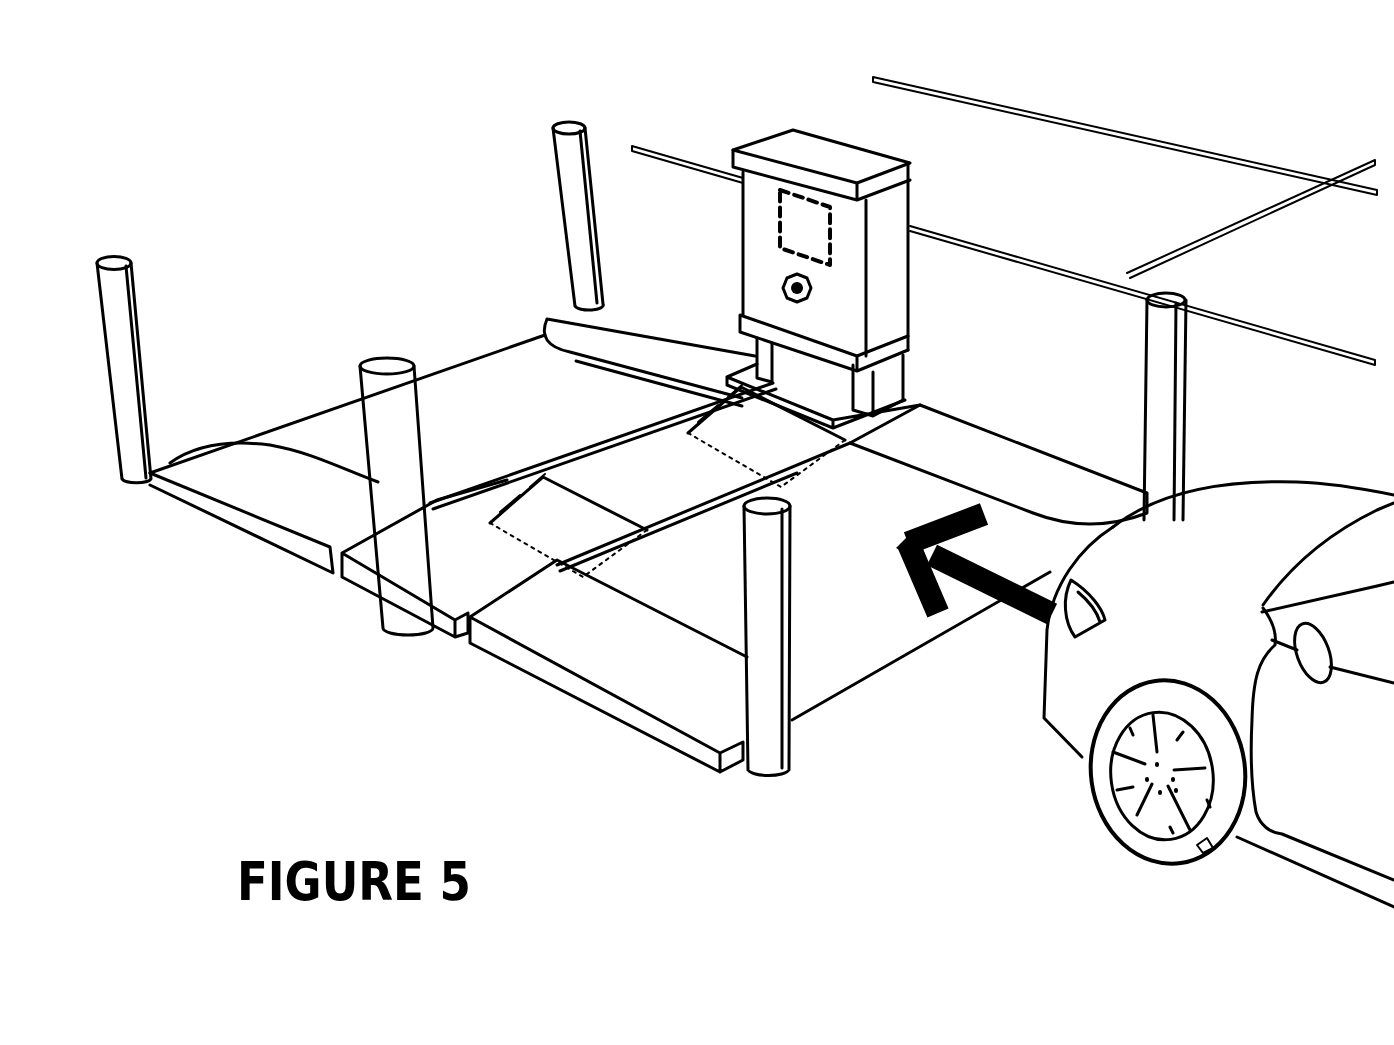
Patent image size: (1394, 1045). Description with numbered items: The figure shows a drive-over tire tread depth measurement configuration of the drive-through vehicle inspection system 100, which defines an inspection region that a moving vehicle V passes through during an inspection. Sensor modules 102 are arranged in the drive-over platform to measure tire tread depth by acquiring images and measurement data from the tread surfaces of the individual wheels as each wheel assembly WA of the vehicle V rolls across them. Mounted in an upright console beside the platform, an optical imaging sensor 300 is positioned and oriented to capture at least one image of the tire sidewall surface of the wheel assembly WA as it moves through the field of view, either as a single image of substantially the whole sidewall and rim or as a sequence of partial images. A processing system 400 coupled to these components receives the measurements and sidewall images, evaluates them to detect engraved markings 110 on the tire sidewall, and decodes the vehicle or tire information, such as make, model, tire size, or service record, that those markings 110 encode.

The drive-through vehicle inspection system 100 is at (297, 213).
The sensor modules 102 is at (725, 427).
The optical imaging sensor 300 is at (777, 272).
The processing system 400 is at (797, 213).
The vehicle V is at (1082, 668).
The wheel assembly WA is at (1080, 792).
The engraved markings 110 is at (1195, 845).